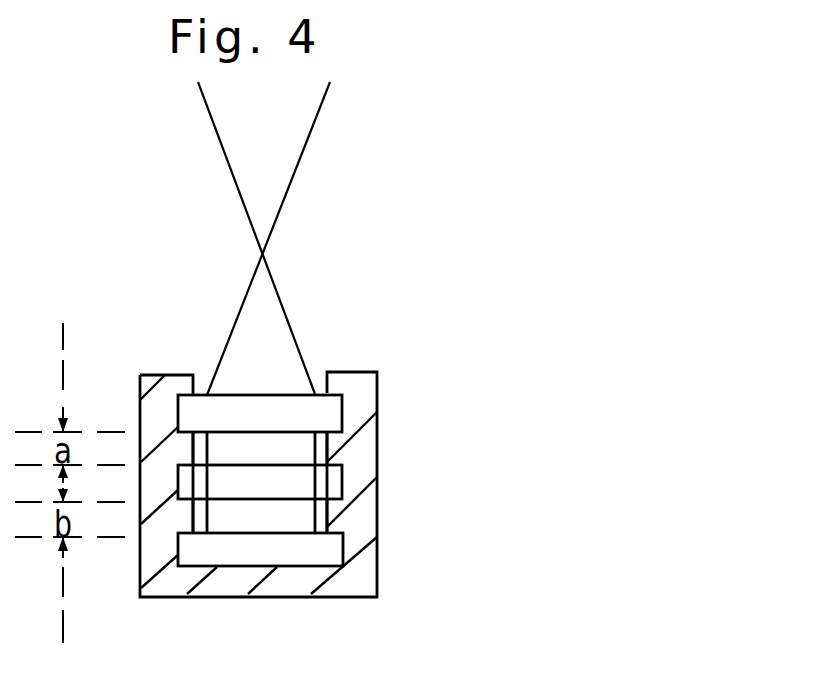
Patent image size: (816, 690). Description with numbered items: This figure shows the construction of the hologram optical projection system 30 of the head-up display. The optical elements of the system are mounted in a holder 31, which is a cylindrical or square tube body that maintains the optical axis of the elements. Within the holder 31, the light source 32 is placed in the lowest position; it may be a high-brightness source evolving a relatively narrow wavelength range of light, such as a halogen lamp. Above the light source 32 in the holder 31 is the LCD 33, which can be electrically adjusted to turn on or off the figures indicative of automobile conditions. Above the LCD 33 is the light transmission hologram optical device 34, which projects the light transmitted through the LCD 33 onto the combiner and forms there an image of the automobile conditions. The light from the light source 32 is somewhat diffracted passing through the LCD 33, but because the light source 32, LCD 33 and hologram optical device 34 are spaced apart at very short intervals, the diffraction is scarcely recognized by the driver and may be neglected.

The hologram optical projection system 30 is at (387, 373).
The holder 31 is at (365, 577).
The light source 32 is at (333, 550).
The LCD 33 is at (335, 482).
The light transmission hologram optical device 34 is at (338, 418).